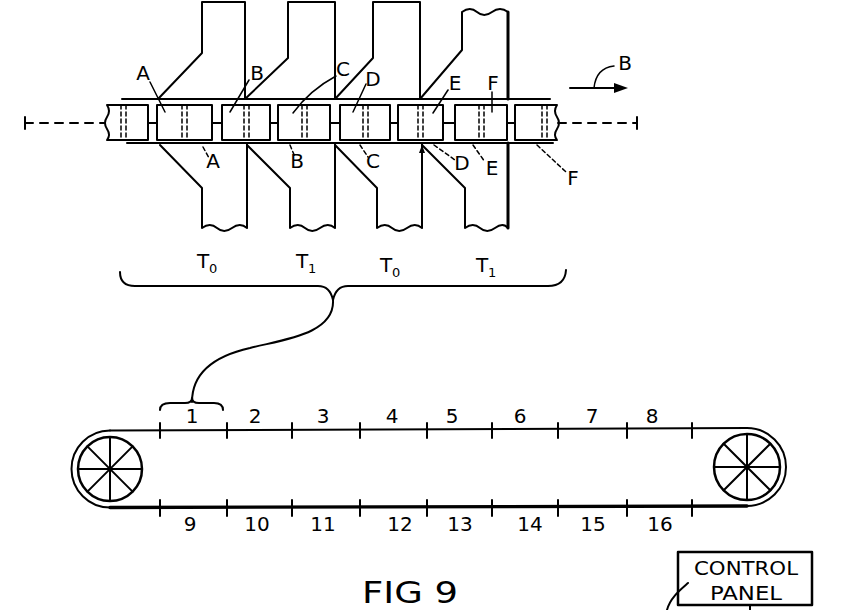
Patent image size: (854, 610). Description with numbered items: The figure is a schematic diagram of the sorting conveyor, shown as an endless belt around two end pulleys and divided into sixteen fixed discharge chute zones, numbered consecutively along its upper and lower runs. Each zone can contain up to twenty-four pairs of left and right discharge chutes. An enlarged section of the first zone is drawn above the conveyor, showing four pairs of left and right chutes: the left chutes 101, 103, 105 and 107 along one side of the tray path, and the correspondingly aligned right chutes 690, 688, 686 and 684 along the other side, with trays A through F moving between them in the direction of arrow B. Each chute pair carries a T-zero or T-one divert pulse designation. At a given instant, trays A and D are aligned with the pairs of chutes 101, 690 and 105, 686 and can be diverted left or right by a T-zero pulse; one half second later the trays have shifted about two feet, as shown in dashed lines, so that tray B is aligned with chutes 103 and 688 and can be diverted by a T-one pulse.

The left discharge chute 101 is at (183, 72).
The left discharge chute 103 is at (278, 67).
The left discharge chute 105 is at (363, 65).
The left discharge chute 107 is at (449, 65).
The right discharge chute 684 is at (447, 168).
The right discharge chute 686 is at (356, 170).
The right discharge chute 688 is at (272, 170).
The right discharge chute 690 is at (180, 165).